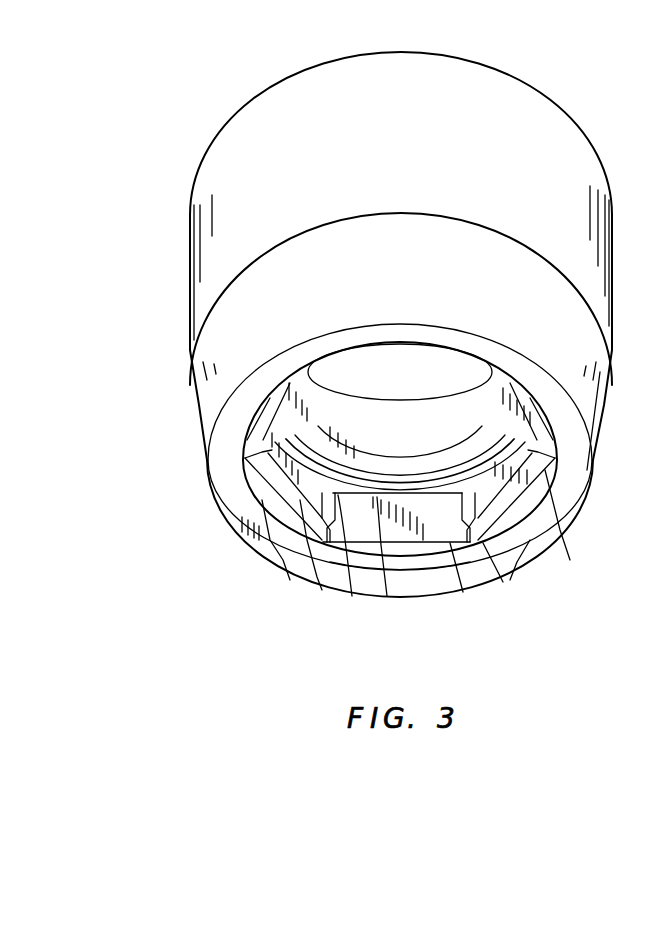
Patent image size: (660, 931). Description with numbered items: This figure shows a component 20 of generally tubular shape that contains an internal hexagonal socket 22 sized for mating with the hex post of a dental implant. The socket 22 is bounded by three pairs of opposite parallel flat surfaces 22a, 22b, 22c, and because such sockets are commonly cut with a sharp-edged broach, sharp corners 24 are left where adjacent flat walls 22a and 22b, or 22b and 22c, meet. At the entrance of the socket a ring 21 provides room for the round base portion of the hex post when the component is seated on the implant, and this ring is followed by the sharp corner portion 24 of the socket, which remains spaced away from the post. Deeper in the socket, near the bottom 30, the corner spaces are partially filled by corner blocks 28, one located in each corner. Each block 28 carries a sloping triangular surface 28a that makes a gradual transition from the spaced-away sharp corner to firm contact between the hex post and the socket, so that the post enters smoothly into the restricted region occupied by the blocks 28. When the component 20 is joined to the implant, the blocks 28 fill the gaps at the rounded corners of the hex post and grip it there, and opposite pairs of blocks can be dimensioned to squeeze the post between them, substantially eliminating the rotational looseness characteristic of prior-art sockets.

The component 20 is at (238, 215).
The ring 21 is at (290, 537).
The hexagonal socket 22 is at (410, 584).
The flat surface 22a is at (270, 452).
The flat surface 22b is at (405, 548).
The flat surface 22c is at (520, 468).
The sharp corners 24 is at (313, 583).
The corner blocks 28 is at (258, 497).
The sloping triangular surfaces 28a is at (305, 565).
The bottom of the socket 30 is at (351, 566).